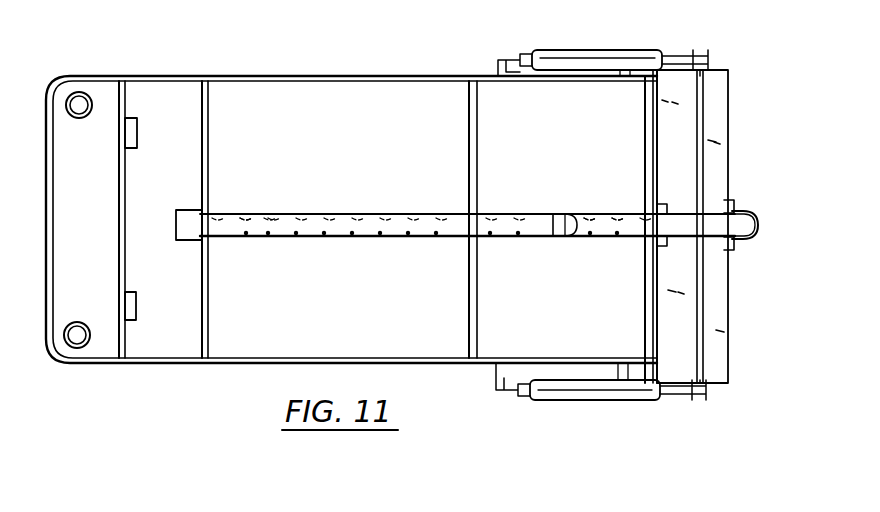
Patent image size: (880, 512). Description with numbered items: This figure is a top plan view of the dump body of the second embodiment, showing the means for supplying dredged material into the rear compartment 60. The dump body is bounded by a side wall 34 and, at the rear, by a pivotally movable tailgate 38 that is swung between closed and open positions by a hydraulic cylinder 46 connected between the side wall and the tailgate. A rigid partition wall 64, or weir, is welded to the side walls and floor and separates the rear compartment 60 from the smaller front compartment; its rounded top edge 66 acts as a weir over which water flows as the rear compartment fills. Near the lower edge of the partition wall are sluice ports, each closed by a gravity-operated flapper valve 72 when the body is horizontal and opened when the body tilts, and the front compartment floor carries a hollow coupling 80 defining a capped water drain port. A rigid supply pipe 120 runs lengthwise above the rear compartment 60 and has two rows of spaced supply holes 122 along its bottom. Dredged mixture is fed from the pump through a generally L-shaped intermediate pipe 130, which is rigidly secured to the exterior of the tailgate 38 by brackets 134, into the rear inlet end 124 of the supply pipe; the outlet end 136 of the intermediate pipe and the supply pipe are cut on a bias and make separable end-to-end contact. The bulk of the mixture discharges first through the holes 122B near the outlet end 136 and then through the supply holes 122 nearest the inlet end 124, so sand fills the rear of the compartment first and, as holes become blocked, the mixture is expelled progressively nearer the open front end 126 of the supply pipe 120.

The side wall 34 is at (383, 31).
The tailgate 38 is at (718, 143).
The hydraulic cylinder 46 is at (597, 15).
The rear compartment 60 is at (382, 140).
The partition wall 64 is at (118, 268).
The top edge 66 is at (126, 262).
The flapper valve 72 is at (137, 124).
The hollow coupling 80 is at (79, 118).
The supply pipe 120 is at (365, 237).
The supply holes 122 is at (266, 214).
The holes 122B is at (618, 238).
The rear inlet end 124 is at (558, 240).
The front end 126 is at (178, 218).
The intermediate pipe 130 is at (683, 240).
The brackets 134 is at (665, 210).
The outlet end 136 is at (606, 213).